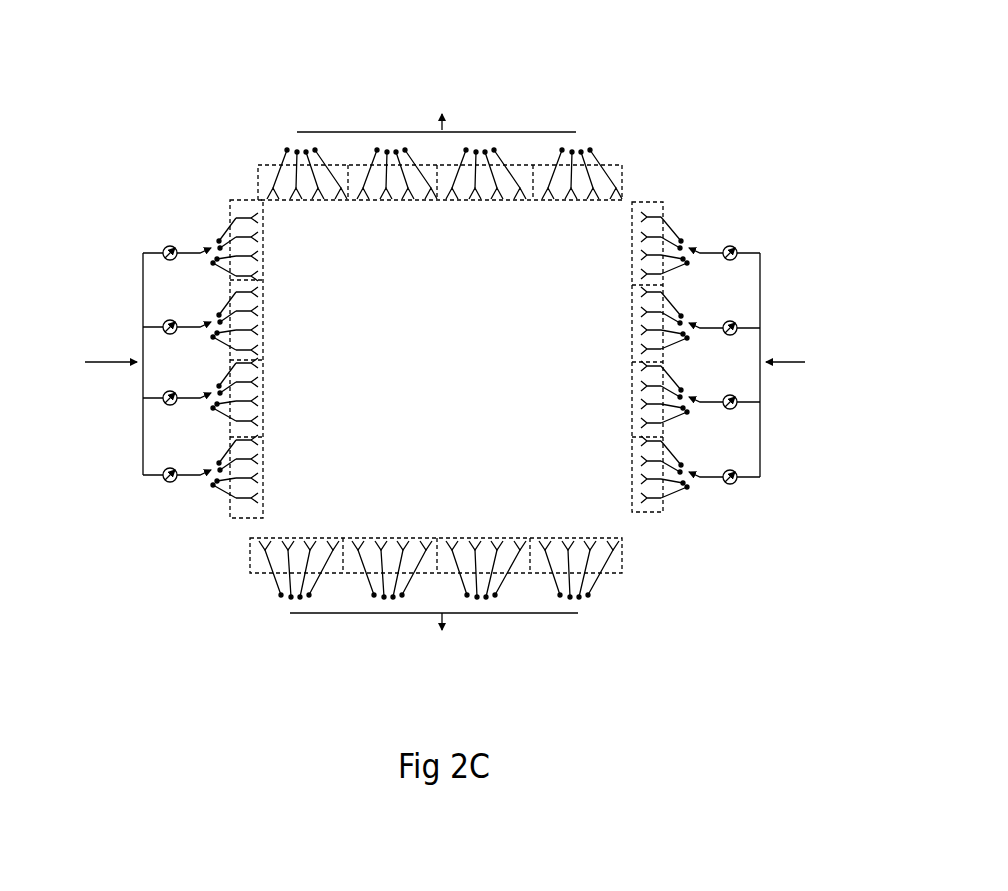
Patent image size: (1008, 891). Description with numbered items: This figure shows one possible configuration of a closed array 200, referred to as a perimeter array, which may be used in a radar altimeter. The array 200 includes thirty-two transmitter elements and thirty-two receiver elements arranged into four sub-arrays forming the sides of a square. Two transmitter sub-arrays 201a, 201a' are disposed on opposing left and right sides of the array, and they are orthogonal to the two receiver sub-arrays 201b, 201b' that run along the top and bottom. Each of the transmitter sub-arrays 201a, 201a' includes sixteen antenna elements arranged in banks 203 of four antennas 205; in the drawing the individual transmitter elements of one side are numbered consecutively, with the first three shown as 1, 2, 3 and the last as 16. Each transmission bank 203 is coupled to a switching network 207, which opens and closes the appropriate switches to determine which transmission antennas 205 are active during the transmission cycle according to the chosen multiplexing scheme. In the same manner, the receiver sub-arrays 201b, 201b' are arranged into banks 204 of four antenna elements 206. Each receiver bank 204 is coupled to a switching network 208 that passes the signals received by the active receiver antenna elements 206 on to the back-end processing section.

The array 200 is at (131, 752).
The transmitter sub-array 201a is at (796, 371).
The transmitter sub-array 201a' is at (88, 364).
The receiver sub-array 201b is at (436, 75).
The receiver sub-array 201b' is at (434, 658).
The bank 203 is at (160, 251).
The bank 204 is at (260, 165).
The antenna 205 is at (263, 277).
The antenna element 206 is at (296, 200).
The switching network 207 is at (207, 246).
The switching network 208 is at (303, 141).
The antenna element 1 is at (267, 218).
The antenna element 2 is at (267, 237).
The antenna element 3 is at (267, 256).
The antenna element 16 is at (272, 501).